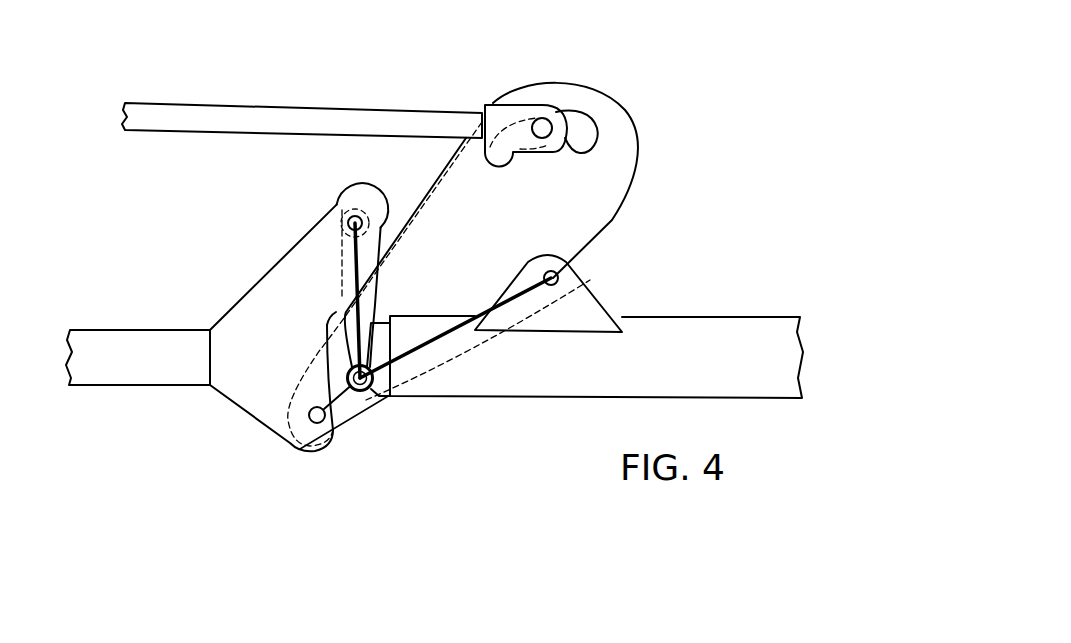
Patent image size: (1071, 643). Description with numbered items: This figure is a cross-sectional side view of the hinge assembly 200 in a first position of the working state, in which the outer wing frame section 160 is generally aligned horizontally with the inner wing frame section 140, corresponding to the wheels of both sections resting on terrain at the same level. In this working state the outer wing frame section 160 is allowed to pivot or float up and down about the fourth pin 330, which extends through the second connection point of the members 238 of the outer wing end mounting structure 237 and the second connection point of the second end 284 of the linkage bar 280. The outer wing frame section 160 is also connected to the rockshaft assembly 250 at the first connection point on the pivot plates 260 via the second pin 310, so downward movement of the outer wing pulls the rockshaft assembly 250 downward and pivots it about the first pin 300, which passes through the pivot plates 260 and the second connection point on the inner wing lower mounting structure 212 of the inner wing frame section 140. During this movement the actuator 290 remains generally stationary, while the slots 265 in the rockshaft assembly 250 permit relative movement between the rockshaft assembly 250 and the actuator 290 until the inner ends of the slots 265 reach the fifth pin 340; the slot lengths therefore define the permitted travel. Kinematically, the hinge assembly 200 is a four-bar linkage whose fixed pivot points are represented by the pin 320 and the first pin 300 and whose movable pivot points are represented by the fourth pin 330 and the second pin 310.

The inner wing frame section 140 is at (150, 340).
The outer wing frame section 160 is at (713, 330).
The hinge assembly 200 is at (120, 232).
The inner wing lower mounting structure 212 is at (307, 447).
The outer wing end mounting structure 237 is at (388, 397).
The members 238 is at (364, 392).
The rockshaft assembly 250 is at (650, 137).
The pivot plates 260 is at (595, 180).
The slots 265 is at (580, 130).
The linkage bar 280 is at (372, 303).
The second end 284 is at (350, 380).
The actuator 290 is at (257, 115).
The first pin 300 is at (293, 443).
The second pin 310 is at (563, 258).
The pin 320 is at (345, 206).
The fourth pin 330 is at (348, 368).
The fifth pin 340 is at (540, 118).